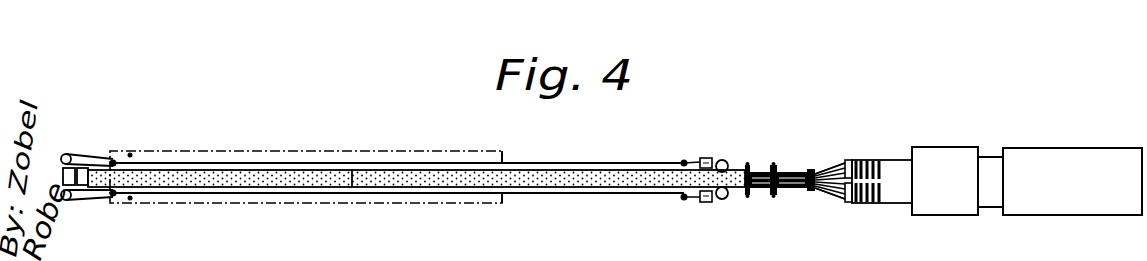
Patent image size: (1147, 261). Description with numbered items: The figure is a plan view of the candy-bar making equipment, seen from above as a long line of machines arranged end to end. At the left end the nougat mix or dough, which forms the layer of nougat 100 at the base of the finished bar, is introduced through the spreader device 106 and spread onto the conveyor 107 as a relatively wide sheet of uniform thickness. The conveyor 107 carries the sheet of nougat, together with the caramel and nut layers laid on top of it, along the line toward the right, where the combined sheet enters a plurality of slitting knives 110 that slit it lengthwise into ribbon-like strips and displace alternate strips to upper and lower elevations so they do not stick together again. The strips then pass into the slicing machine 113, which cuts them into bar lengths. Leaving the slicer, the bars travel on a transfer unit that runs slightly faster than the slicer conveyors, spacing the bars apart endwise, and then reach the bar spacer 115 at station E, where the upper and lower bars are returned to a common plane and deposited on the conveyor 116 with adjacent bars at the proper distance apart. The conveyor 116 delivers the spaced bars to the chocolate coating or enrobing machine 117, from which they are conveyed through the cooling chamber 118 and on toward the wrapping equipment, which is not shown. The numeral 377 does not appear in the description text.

The layer of nougat 100 is at (247, 180).
The spreader device 106 is at (88, 206).
The conveyor 107 is at (542, 202).
The outer tube with clips 377 is at (632, 195).
The slitting knives 110 is at (758, 198).
The slicing machine 113 is at (792, 196).
The bar spacer 115 is at (829, 200).
The conveyor 116 is at (882, 207).
The chocolate coating or enrobing machine 117 is at (942, 215).
The cooling chamber 118 is at (1062, 215).
The station E is at (828, 162).